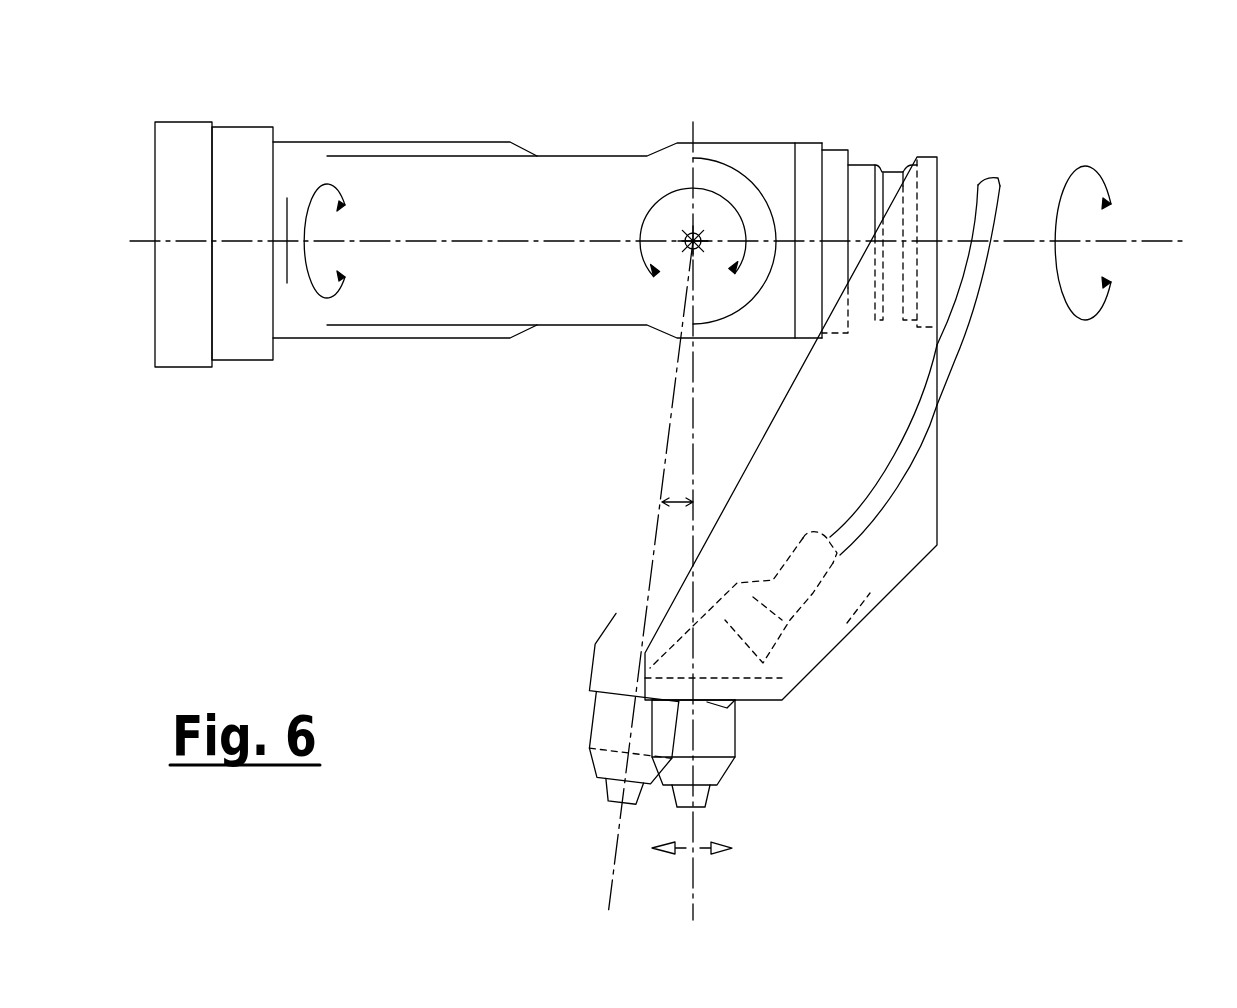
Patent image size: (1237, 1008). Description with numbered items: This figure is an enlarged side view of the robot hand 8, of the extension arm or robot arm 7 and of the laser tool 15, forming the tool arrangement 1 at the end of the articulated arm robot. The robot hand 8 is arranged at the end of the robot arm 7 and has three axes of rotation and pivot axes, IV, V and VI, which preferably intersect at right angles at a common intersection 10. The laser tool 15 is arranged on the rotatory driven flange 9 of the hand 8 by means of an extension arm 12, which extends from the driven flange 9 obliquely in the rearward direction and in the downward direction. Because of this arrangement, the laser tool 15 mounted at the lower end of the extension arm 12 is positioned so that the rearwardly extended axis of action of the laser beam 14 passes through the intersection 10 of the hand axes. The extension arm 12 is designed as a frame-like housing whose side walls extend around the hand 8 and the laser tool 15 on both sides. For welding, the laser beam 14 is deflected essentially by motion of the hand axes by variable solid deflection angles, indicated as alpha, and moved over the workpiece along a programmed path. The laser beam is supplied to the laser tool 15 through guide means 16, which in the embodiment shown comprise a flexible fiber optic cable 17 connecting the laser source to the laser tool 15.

The machining head 1 is at (682, 487).
The extension arm or robot arm 7 is at (198, 325).
The robot hand 8 is at (472, 194).
The driven flange 9 is at (913, 165).
The intersection 10 is at (690, 248).
The extension arm 12 is at (893, 545).
The laser beam 14 is at (695, 412).
The laser tool 15 is at (600, 712).
The guide means 16 is at (1018, 247).
The flexible fiber optic cable 17 is at (985, 200).